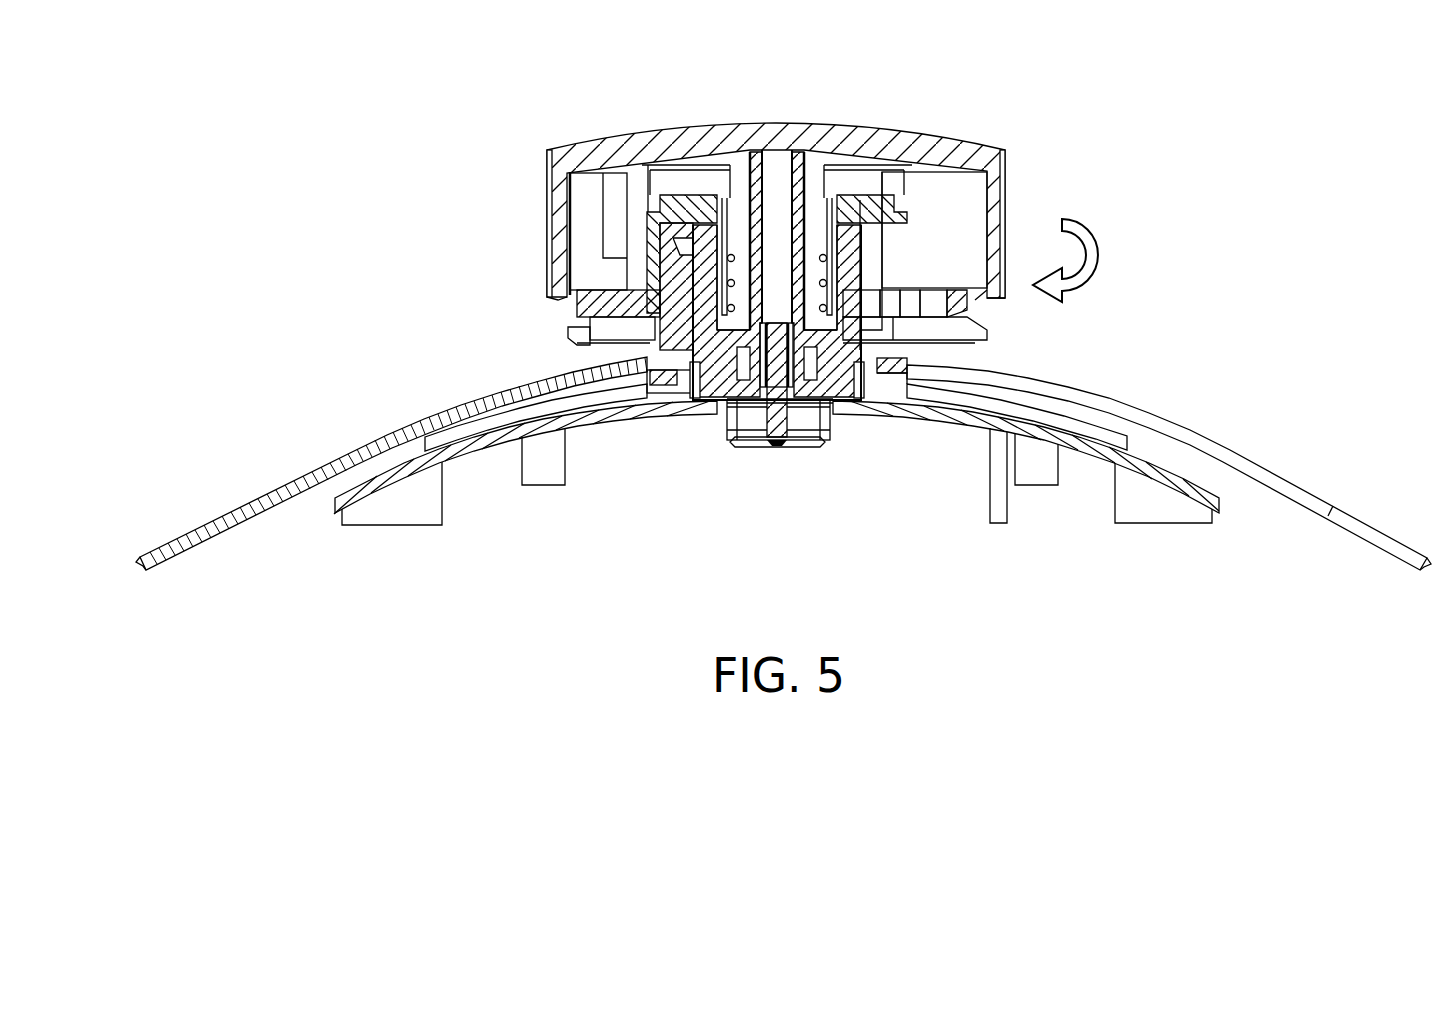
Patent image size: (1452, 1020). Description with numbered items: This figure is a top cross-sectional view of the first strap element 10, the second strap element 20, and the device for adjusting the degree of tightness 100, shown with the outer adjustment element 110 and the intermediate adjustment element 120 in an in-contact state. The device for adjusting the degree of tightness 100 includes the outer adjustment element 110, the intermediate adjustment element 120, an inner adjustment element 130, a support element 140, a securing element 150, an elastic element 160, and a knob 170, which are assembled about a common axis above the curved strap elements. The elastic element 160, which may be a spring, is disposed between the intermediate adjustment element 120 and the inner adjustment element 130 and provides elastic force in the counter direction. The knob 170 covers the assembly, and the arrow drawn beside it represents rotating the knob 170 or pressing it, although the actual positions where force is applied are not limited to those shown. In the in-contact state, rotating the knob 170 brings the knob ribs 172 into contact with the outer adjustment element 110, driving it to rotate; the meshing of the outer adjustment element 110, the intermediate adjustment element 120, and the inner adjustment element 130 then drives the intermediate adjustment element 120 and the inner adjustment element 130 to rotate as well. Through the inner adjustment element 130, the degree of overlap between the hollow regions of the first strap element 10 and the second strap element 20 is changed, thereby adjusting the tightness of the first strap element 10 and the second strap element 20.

The first strap element 10 is at (173, 548).
The second strap element 20 is at (1370, 538).
The device for adjusting the degree of tightness 100 is at (795, 299).
The outer adjustment element 110 is at (653, 252).
The intermediate adjustment element 120 is at (820, 220).
The inner adjustment element 130 is at (838, 372).
The support element 140 is at (653, 400).
The securing element 150 is at (778, 410).
The elastic element 160 is at (837, 293).
The knob 170 is at (606, 152).
The knob ribs 172 is at (640, 197).